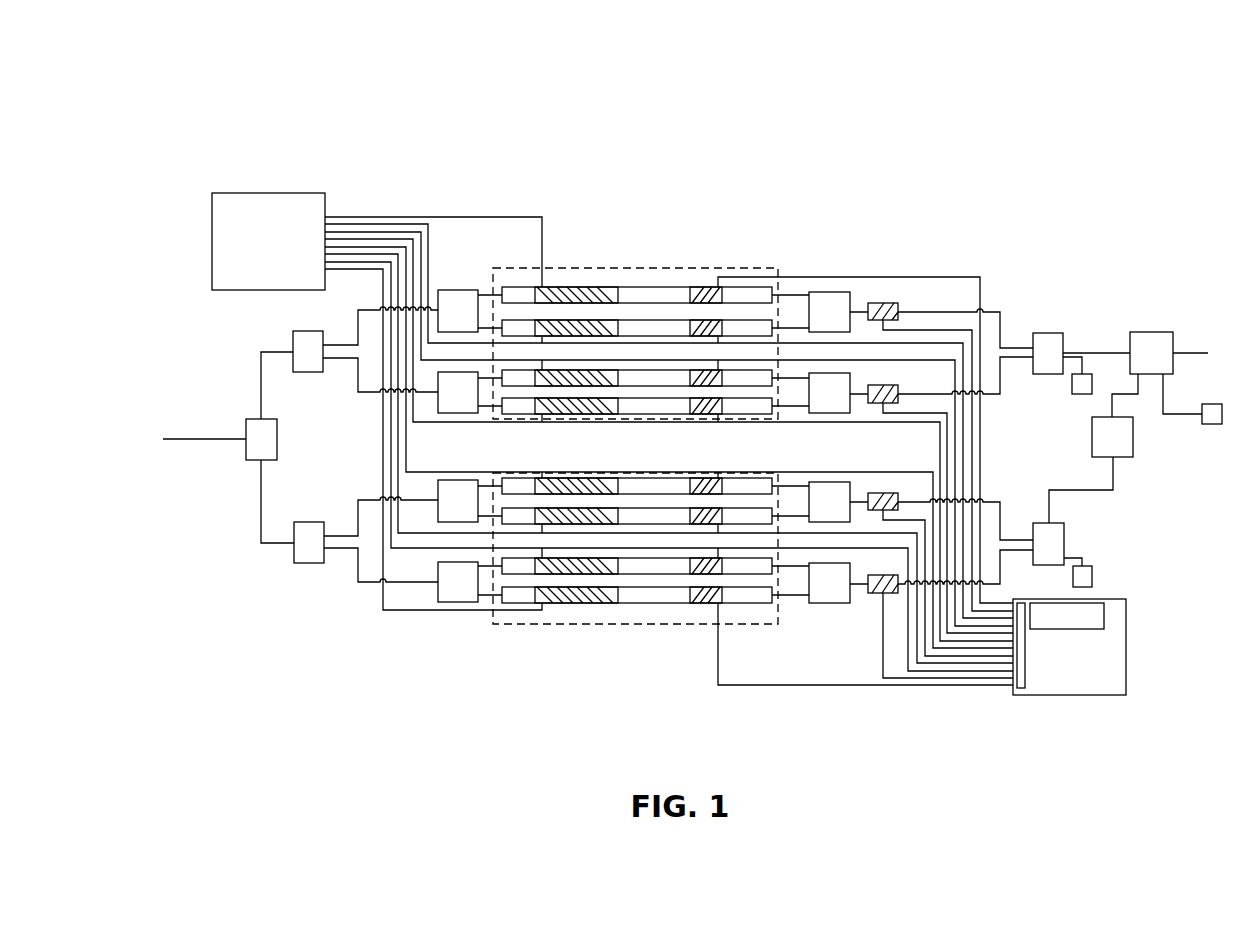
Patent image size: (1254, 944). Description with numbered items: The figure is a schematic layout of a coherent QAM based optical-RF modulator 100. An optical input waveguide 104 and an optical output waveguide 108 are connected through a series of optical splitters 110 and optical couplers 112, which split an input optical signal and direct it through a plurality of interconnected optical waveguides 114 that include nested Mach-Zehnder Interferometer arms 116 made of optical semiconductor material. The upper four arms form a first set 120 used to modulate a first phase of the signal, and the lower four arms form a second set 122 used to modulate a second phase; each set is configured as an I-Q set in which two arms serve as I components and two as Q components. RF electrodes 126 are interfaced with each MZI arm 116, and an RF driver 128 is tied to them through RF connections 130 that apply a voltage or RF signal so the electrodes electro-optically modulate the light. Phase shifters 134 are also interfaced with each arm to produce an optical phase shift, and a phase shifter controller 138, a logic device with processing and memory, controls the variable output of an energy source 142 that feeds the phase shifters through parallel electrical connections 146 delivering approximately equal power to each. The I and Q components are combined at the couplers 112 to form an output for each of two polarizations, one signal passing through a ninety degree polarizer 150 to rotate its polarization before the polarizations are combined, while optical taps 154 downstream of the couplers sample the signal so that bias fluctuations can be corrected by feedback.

The coherent QAM based optical-RF modulator 100 is at (188, 142).
The optical input waveguide 104 is at (172, 437).
The optical output waveguide 108 is at (1201, 352).
The optical splitters 110 is at (450, 380).
The optical couplers 112 is at (818, 392).
The interconnected optical waveguides 114 is at (402, 595).
The Mach-Zehnder Interferometer arms 116 is at (651, 330).
The first set of MZI arms 120 is at (758, 260).
The second set of MZI arms 122 is at (513, 634).
The RF electrodes 126 is at (572, 332).
The RF driver 128 is at (268, 215).
The RF connections 130 is at (380, 237).
The phase shifters 134 is at (705, 330).
The phase shifter controller 138 is at (1101, 696).
The energy source 142 is at (1093, 618).
The electrical connections 146 is at (953, 665).
The 90 degree polarizer 150 is at (1100, 437).
The optical taps 154 is at (1086, 378).